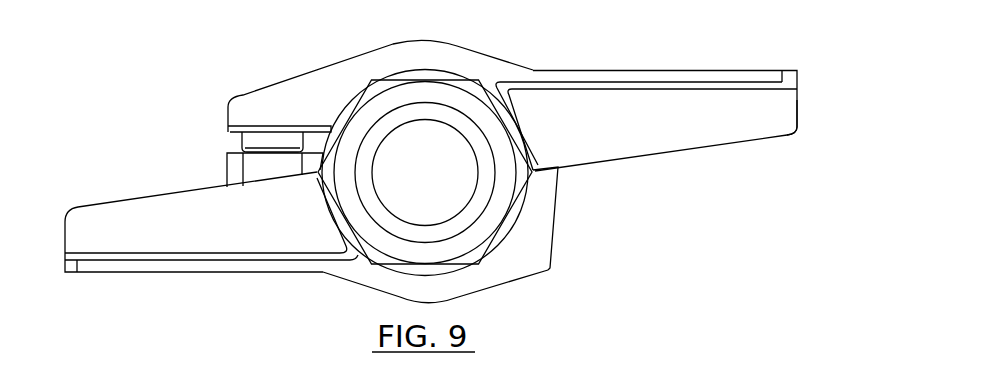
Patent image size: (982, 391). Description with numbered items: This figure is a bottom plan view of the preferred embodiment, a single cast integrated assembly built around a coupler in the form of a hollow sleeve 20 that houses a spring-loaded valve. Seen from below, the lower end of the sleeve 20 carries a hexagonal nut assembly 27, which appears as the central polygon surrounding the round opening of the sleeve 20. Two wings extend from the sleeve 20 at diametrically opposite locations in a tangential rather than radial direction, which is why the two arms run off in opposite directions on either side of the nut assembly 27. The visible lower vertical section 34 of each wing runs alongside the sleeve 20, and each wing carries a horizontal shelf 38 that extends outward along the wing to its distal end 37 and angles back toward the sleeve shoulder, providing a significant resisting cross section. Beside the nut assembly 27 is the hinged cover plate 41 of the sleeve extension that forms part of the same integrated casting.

The hollow sleeve 20 is at (503, 202).
The nut assembly 27 is at (522, 175).
The lower vertical section 34 is at (238, 263).
The distal end 37 is at (788, 135).
The shelf 38 is at (175, 212).
The hinged cover plate 41 is at (523, 247).